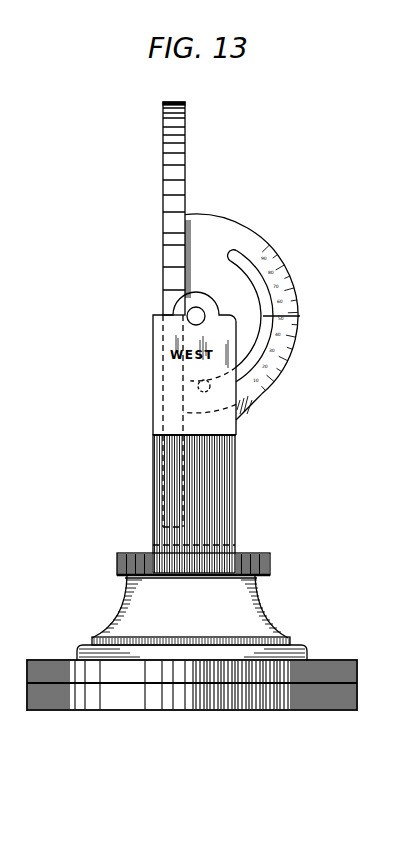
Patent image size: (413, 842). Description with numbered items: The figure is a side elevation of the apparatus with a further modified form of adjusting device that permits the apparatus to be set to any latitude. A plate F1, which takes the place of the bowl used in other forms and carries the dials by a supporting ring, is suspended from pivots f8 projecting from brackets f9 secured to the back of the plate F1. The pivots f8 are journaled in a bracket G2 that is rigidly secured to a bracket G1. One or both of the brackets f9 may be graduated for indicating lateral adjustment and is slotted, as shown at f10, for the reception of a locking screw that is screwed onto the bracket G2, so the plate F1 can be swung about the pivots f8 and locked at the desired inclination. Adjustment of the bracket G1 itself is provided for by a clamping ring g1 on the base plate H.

The plate F1 is at (183, 247).
The pivot f8 is at (187, 316).
The bracket f9 is at (253, 250).
The slot f10 is at (300, 316).
The bracket G2 is at (225, 477).
The bracket G1 is at (191, 610).
The clamping ring g1 is at (345, 661).
The base plate H is at (337, 697).